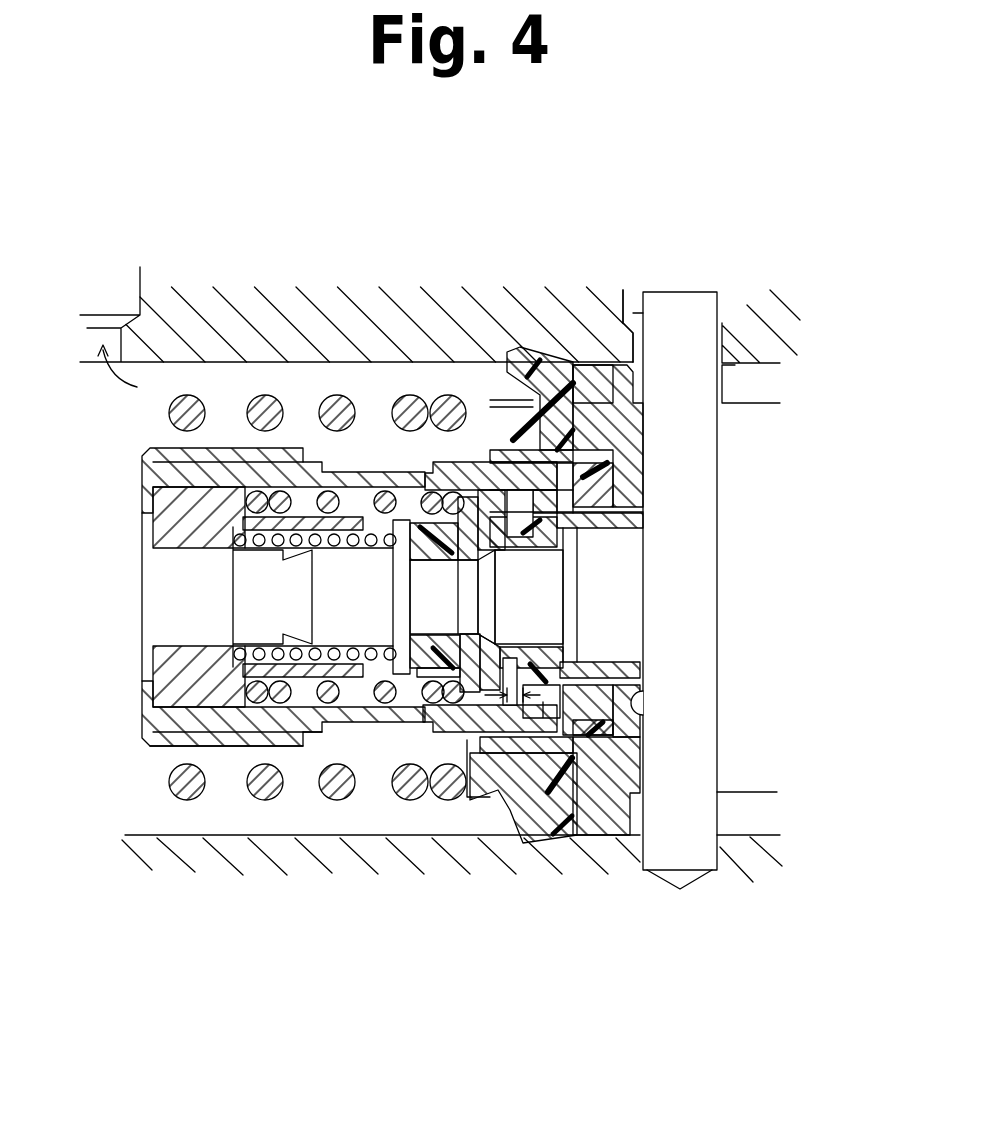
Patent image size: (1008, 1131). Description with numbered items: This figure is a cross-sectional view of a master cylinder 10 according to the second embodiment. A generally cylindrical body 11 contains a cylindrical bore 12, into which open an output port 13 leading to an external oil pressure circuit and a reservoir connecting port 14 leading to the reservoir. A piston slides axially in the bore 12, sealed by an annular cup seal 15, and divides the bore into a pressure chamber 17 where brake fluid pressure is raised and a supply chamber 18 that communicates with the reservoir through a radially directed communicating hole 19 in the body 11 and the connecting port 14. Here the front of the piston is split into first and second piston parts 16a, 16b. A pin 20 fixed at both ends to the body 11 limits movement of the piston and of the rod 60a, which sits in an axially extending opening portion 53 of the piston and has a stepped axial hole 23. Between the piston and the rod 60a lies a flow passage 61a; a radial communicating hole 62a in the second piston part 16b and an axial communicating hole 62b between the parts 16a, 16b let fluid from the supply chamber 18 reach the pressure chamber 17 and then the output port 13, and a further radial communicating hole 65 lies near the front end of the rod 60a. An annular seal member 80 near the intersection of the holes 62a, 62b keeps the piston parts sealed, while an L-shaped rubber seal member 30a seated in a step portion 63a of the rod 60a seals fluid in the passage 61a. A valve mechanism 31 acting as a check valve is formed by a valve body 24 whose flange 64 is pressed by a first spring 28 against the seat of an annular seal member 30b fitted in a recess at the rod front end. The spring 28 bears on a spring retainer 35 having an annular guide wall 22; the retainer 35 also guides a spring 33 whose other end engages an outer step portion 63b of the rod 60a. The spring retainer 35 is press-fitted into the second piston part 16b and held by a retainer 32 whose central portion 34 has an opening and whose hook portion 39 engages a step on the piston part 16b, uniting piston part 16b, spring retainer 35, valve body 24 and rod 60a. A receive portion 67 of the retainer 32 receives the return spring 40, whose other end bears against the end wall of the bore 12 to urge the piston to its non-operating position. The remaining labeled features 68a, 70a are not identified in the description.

The power transmission device 10 is at (644, 238).
The body 11 is at (592, 850).
The cylindrical bore 12 is at (728, 835).
The output port 13 is at (103, 300).
The reservoir connecting port 14 is at (633, 313).
The annular cup seal 15 is at (593, 387).
The first piston part 16a is at (590, 362).
The second piston part 16b is at (450, 445).
The pressure generating chamber 17 is at (151, 812).
The supply chamber 18 is at (760, 845).
The communicating hole 19 is at (640, 336).
The pin 20 is at (678, 848).
The annular guide wall 22 is at (312, 677).
The hole 23 is at (627, 595).
The valve body 24 is at (333, 585).
The first spring 28 is at (373, 660).
The seal member 30a is at (505, 450).
The annular seal member 30b is at (412, 488).
The valve mechanism 31 is at (290, 762).
The retainer 32 is at (232, 746).
The spring 33 is at (385, 704).
The central portion 34 is at (150, 640).
The spring retainer 35 is at (235, 686).
The hook portion 39 is at (402, 800).
The return spring 40 is at (188, 395).
The opening portion 53 is at (645, 714).
The rod 60a is at (600, 492).
The flow passage 61a is at (600, 510).
The communicating hole 62a is at (605, 440).
The communicating hole 62b is at (563, 363).
The step portion 63a is at (560, 662).
The outer step portion 63b is at (474, 702).
The flange 64 is at (332, 472).
The communicating hole 65 is at (365, 477).
The receive portion 67 is at (456, 735).
The plate 68a is at (490, 537).
The thin plate 70a is at (720, 403).
The annular seal member 80 is at (590, 452).